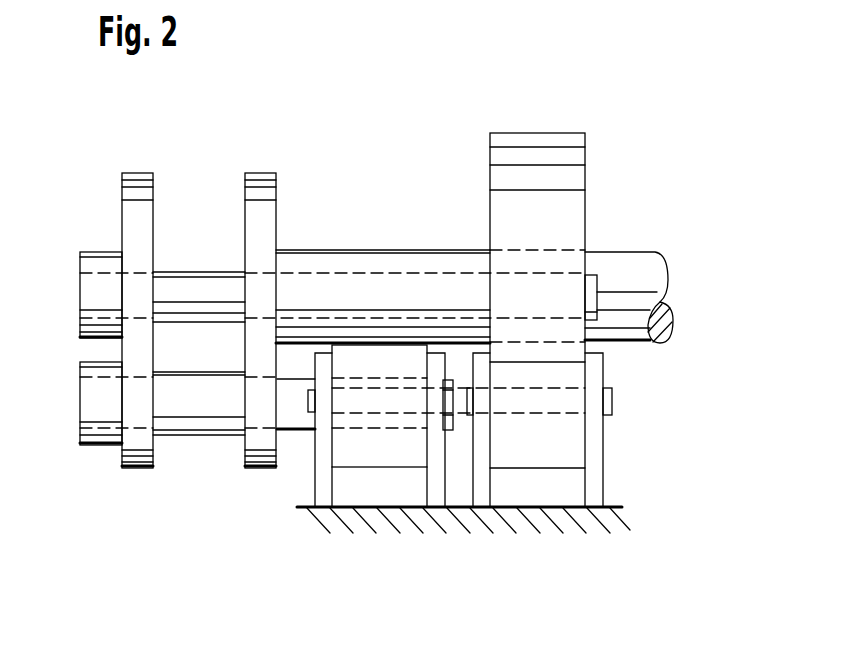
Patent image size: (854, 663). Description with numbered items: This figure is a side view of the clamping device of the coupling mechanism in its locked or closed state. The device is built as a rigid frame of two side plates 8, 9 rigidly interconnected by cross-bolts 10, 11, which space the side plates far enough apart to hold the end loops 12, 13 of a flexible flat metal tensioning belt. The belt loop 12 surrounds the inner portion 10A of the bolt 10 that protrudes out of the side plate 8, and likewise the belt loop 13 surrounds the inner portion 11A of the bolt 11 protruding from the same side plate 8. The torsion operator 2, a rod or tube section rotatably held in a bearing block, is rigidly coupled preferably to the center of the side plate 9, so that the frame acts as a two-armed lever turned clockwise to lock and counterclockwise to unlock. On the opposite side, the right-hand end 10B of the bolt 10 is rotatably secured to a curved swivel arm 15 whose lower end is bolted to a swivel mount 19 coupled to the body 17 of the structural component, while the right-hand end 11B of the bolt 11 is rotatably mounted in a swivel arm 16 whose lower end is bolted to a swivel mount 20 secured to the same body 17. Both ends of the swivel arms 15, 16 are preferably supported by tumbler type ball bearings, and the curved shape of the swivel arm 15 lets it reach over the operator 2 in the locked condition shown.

The torsion operator 2 is at (433, 257).
The side plate 8 is at (135, 212).
The side plate 9 is at (268, 203).
The cross-bolt 10 is at (97, 300).
The inner portion of the bolt 10A is at (163, 302).
The right-hand end of the bolt 10B is at (657, 292).
The cross-bolt 11 is at (95, 400).
The inner portion of the bolt 11A is at (185, 403).
The right-hand end of the bolt 11B is at (295, 415).
The belt loop 12 is at (202, 283).
The belt loop 13 is at (207, 420).
The curved swivel arm 15 is at (573, 178).
The swivel arm 16 is at (358, 455).
The structural component body 17 is at (517, 515).
The swivel mount 19 is at (592, 470).
The swivel mount 20 is at (323, 457).